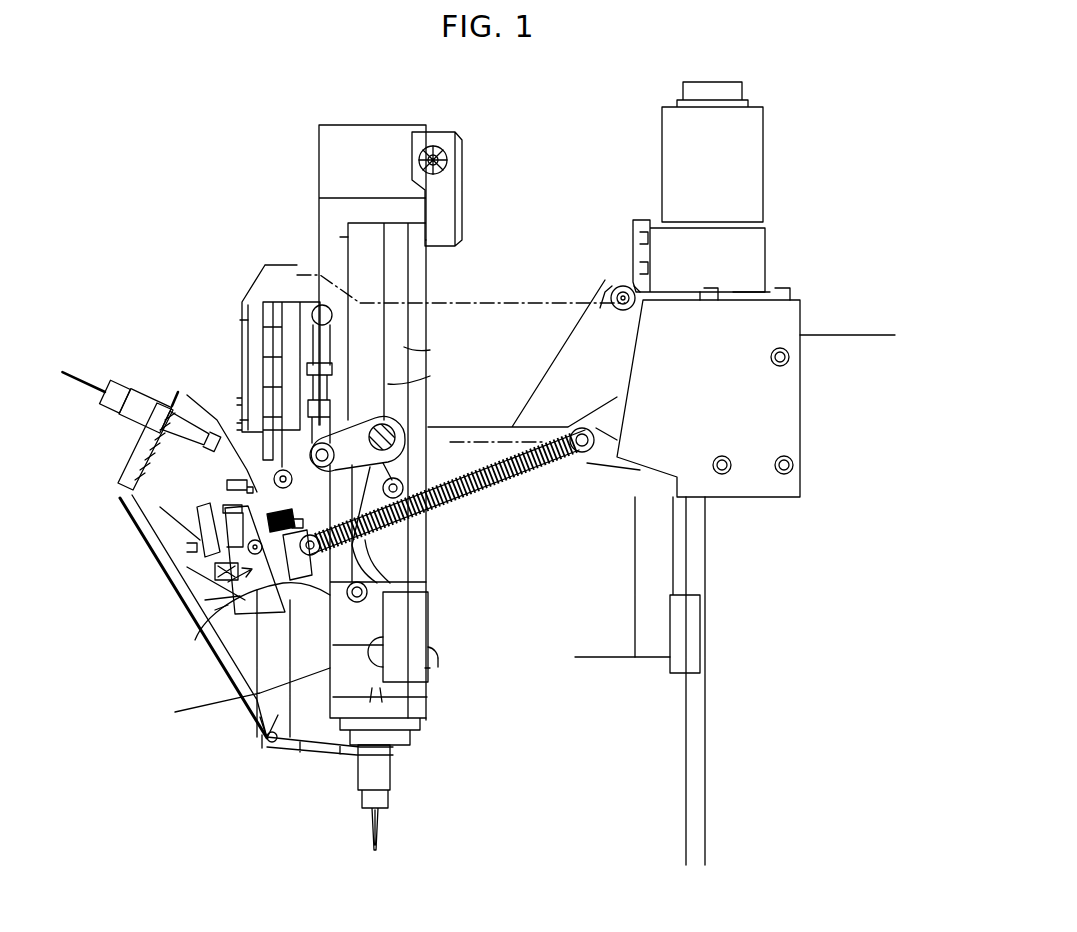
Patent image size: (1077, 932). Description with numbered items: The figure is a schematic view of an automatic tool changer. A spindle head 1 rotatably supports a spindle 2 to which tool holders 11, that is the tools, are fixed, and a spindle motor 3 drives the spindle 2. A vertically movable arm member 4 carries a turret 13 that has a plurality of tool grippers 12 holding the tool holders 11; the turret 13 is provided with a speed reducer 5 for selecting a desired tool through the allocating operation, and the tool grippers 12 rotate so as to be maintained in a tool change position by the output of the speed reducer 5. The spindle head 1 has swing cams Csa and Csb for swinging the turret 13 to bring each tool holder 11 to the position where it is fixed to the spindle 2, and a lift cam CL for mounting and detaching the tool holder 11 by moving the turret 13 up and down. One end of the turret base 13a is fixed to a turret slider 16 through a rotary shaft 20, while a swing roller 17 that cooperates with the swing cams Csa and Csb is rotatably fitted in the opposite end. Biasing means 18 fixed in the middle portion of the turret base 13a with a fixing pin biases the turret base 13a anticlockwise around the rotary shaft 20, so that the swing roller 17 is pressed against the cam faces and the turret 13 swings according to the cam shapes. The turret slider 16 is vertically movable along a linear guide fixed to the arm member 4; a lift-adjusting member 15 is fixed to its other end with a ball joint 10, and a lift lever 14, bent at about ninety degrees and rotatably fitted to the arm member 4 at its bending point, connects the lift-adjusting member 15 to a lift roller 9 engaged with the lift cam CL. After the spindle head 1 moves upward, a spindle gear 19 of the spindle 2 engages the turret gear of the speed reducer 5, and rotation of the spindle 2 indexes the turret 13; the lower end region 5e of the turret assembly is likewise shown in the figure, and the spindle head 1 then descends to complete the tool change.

The spindle head 1 is at (575, 657).
The spindle 2 is at (420, 738).
The spindle motor 3 is at (335, 172).
The arm member 4 is at (495, 300).
The speed reducer 5 is at (262, 583).
The frame lower end 5e is at (278, 715).
The lift roller 9 is at (410, 500).
The ball joint 10 is at (263, 267).
The tool holder 11 is at (137, 403).
The tool gripper 12 is at (160, 507).
The turret 13 is at (187, 567).
The turret base 13a is at (225, 645).
The lift lever 14 is at (240, 420).
The lift-adjusting member 15 is at (262, 412).
The turret slider 16 is at (240, 320).
The swing roller 17 is at (385, 592).
The biasing means 18 is at (705, 622).
The spindle gear 19 is at (300, 747).
The rotary shaft 20 is at (263, 475).
The swing cam Csa is at (340, 237).
The swing cam Csb is at (430, 668).
The lift cam CL is at (408, 347).